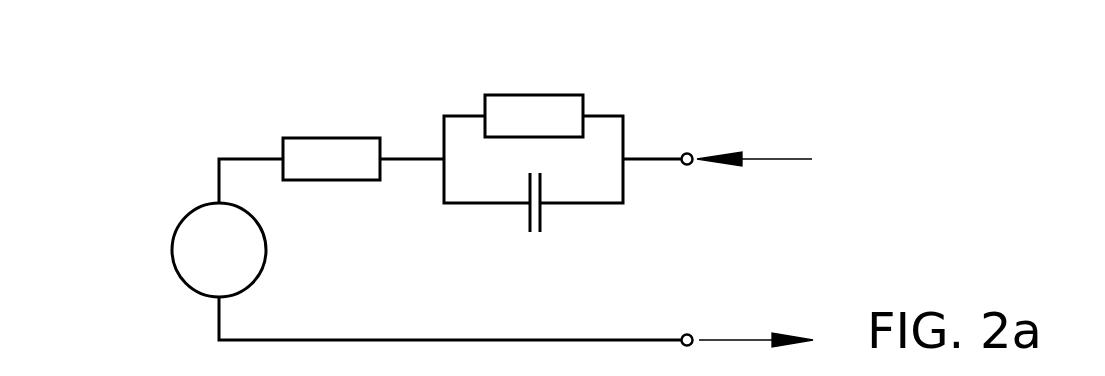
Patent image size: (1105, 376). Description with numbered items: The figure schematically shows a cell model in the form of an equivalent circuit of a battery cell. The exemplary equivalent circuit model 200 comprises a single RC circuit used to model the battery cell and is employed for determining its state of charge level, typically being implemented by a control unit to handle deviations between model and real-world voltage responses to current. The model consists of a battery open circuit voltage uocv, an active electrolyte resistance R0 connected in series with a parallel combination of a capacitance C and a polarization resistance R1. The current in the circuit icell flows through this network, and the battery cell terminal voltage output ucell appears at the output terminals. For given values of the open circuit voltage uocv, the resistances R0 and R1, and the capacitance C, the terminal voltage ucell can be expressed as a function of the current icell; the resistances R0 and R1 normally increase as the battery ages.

The equivalent circuit model 200 is at (150, 110).
The battery open circuit voltage uocv is at (177, 228).
The active electrolyte resistance R0 is at (330, 138).
The polarization resistance R1 is at (530, 95).
The parallel capacitance C is at (526, 218).
The current in the circuit icell is at (766, 157).
The battery cell terminal voltage output ucell is at (736, 338).